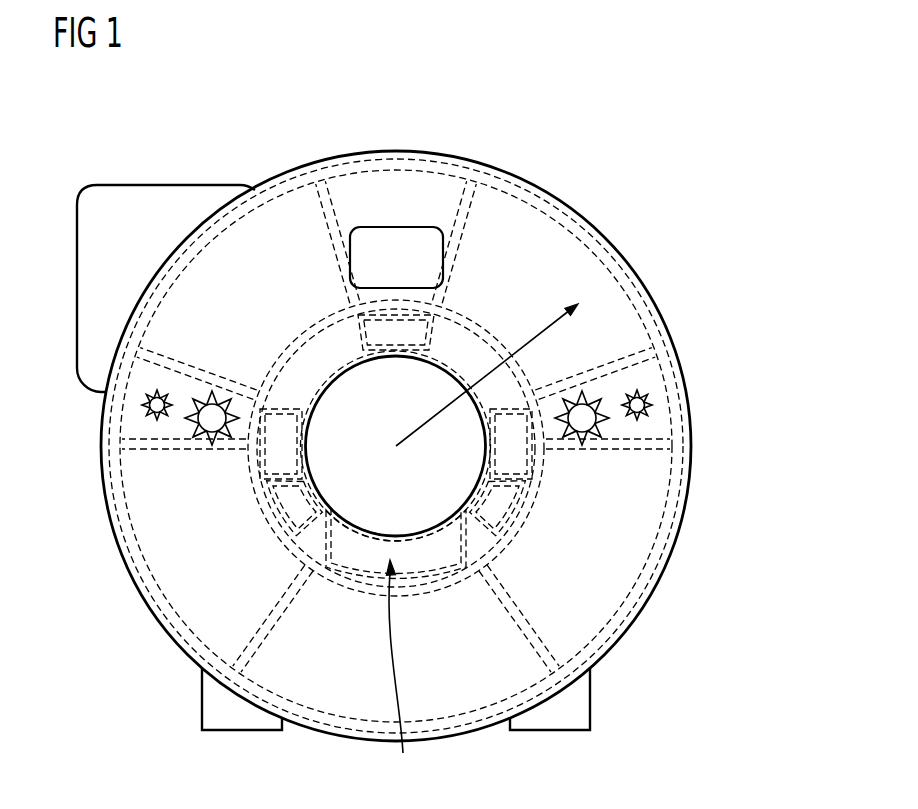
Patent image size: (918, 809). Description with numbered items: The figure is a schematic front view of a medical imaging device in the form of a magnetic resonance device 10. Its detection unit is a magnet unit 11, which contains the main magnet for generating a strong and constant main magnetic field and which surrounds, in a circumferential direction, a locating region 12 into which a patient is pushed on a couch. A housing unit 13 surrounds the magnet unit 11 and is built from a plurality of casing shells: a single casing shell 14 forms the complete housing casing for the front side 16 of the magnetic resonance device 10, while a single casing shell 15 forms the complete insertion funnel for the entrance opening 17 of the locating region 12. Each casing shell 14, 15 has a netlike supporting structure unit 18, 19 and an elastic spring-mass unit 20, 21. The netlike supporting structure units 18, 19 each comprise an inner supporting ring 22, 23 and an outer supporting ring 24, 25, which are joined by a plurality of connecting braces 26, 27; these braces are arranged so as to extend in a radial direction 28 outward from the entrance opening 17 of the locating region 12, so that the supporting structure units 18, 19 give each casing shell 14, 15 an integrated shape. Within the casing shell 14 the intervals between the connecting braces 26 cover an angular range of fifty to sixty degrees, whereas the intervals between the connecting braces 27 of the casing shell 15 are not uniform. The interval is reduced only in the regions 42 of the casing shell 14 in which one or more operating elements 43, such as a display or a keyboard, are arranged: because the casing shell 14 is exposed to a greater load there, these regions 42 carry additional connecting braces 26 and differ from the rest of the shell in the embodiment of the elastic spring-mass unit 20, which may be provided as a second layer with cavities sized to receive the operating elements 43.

The magnetic resonance device 10 is at (640, 108).
The magnet unit 11 is at (530, 167).
The locating region 12 is at (330, 503).
The housing unit 13 is at (706, 465).
The casing shell 14 is at (632, 558).
The casing shell 15 is at (399, 673).
The front side 16 is at (600, 578).
The entrance opening 17 is at (316, 493).
The netlike supporting structure unit 18 is at (622, 262).
The netlike supporting structure unit 19 is at (468, 492).
The elastic spring-mass unit 20 is at (318, 686).
The elastic spring-mass unit 21 is at (443, 557).
The inner supporting ring 22 is at (419, 593).
The inner supporting ring 23 is at (368, 538).
The outer supporting ring 24 is at (338, 164).
The outer supporting ring 25 is at (310, 340).
The connecting braces 26 is at (154, 456).
The connecting braces 27 is at (362, 336).
The radial direction 28 is at (557, 323).
The regions 42 is at (146, 380).
The operating elements 43 is at (381, 240).